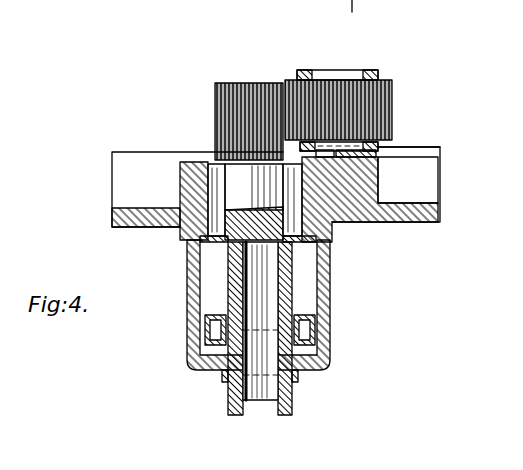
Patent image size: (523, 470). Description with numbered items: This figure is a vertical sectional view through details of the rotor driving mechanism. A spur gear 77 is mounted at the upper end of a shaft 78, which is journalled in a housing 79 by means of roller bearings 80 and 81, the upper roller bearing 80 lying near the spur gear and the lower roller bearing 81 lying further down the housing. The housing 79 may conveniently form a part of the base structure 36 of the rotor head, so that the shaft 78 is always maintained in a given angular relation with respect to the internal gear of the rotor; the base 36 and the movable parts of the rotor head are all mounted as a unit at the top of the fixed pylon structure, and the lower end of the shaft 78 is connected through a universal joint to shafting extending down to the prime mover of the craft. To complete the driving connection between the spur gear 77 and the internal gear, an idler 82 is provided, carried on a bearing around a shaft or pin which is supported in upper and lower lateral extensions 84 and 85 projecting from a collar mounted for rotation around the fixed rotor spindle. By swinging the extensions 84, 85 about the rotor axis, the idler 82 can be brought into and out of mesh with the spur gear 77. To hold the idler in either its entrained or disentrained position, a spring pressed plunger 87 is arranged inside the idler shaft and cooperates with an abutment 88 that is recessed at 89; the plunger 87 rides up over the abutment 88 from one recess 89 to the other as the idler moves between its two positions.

The base structure 36 is at (430, 212).
The spur gear 77 is at (228, 114).
The shaft 78 is at (330, 288).
The housing 79 is at (330, 312).
The roller bearing 80 is at (216, 222).
The roller bearing 81 is at (205, 334).
The idler 82 is at (380, 109).
The upper lateral extension 84 is at (352, 72).
The lower lateral extension 85 is at (378, 148).
The spring pressed plunger 87 is at (345, 190).
The abutment 88 is at (396, 154).
The recess 89 is at (380, 182).